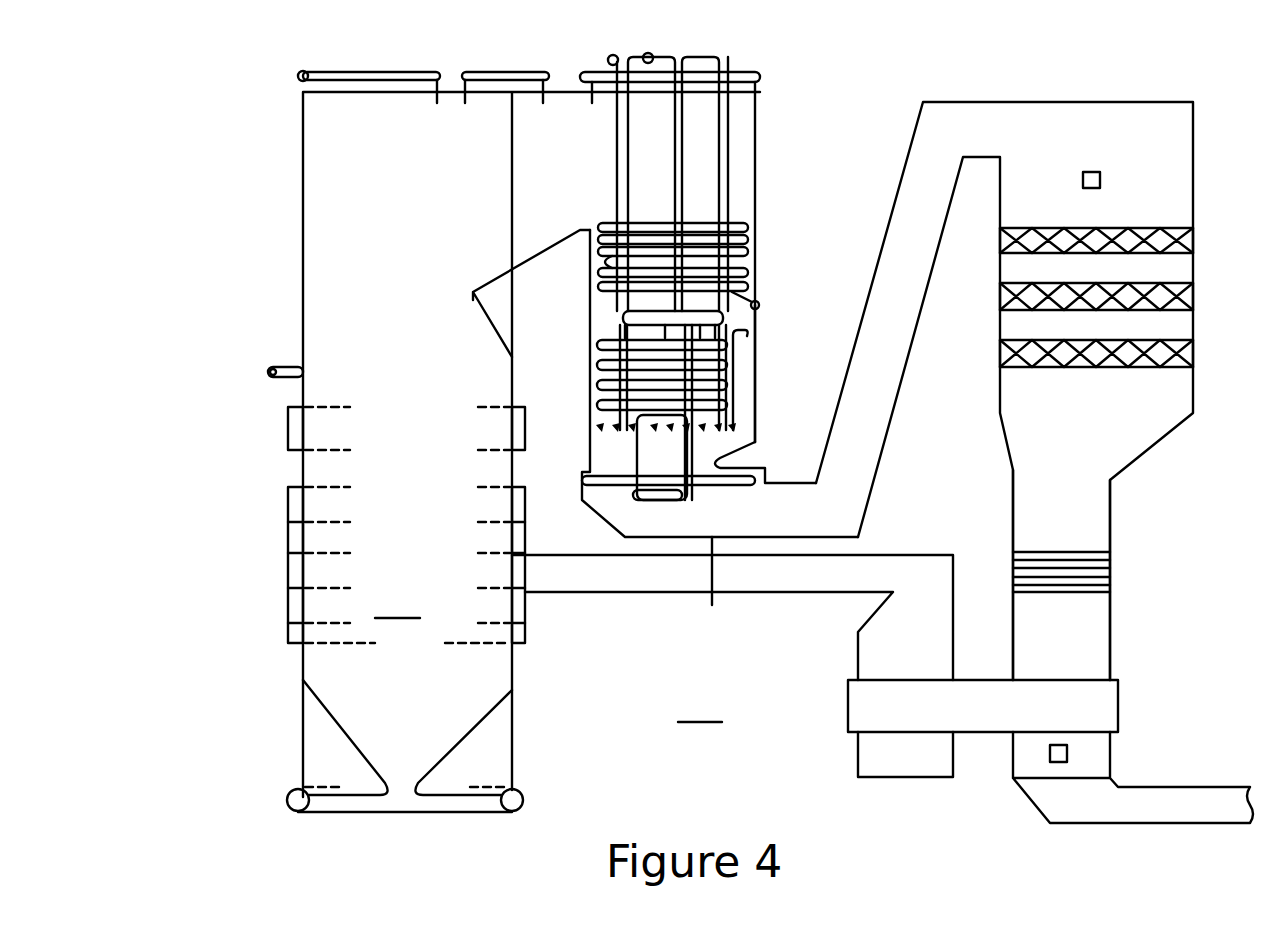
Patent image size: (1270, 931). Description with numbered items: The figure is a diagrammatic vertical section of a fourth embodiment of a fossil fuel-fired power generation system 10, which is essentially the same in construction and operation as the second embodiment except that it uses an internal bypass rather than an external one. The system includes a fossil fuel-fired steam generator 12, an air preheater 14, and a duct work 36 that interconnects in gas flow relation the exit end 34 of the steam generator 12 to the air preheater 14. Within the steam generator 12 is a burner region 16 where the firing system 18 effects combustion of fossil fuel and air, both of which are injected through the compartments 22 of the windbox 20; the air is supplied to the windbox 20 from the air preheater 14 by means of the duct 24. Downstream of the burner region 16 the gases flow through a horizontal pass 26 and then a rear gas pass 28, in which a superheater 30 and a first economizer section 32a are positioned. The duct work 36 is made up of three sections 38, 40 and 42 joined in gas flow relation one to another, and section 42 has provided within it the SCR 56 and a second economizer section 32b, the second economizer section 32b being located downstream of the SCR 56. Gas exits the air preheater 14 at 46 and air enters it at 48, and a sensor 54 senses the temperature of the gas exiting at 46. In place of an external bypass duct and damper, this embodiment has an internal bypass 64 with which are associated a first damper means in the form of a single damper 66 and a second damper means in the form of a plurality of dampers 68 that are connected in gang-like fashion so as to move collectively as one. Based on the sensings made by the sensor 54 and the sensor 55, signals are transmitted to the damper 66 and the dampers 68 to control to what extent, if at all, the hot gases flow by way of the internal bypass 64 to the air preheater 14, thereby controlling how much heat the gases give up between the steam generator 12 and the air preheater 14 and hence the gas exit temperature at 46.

The fossil fuel-fired power generation system 10 is at (705, 708).
The fossil fuel-fired steam generator 12 is at (298, 210).
The air preheater 14 is at (1128, 698).
The burner region 16 is at (397, 601).
The firing system 18 is at (283, 458).
The windbox 20 is at (532, 618).
The compartments 22 is at (287, 440).
The duct 24 is at (748, 600).
The horizontal pass 26 is at (541, 266).
The rear gas pass 28 is at (586, 335).
The superheater 30 is at (758, 236).
The first economizer section 32a is at (594, 385).
The second economizer section 32b is at (1118, 562).
The exit end 34 is at (739, 457).
The duct work 36 is at (926, 319).
The duct work section 38 is at (712, 605).
The duct work section 40 is at (878, 473).
The duct work section 42 is at (1000, 403).
The gas exit 46 is at (1112, 762).
The air inlet 48 is at (857, 757).
The sensor 54 is at (1050, 762).
The sensor 55 is at (1091, 172).
The SCR 56 is at (1070, 221).
The internal bypass 64 is at (749, 385).
The damper 66 is at (750, 340).
The plurality of dampers 68 is at (707, 427).